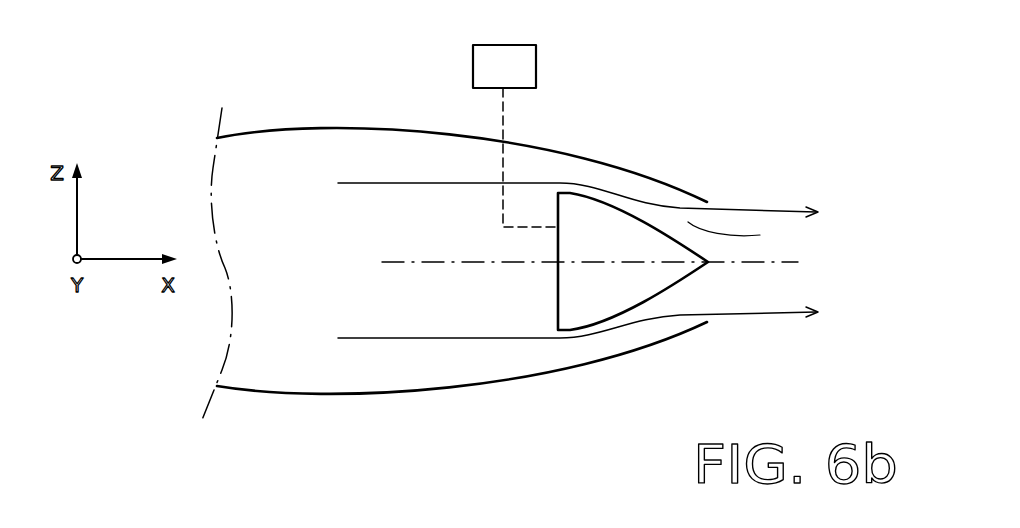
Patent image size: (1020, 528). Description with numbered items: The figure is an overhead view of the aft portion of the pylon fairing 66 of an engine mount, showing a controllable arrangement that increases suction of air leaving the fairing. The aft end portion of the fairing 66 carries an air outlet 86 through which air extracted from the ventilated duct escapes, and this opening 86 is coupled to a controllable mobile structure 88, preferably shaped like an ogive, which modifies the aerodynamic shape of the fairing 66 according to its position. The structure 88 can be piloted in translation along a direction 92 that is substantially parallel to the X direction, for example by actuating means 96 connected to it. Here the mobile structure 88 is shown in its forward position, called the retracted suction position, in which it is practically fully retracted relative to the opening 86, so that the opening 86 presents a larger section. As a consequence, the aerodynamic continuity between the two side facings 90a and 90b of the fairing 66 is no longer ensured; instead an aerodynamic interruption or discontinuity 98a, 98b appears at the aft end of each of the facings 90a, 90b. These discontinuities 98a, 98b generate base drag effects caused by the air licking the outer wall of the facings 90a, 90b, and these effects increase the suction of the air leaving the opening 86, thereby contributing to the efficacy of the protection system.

The aft pylon fairing 66 is at (462, 247).
The side facing 90a is at (397, 130).
The side facing 90b is at (448, 387).
The controllable mobile structure 88 is at (603, 200).
The actuating means 96 is at (537, 70).
The translation direction 92 is at (468, 262).
The aerodynamic discontinuity 98a is at (710, 200).
The aerodynamic discontinuity 98b is at (708, 322).
The air outlet 86 is at (760, 235).